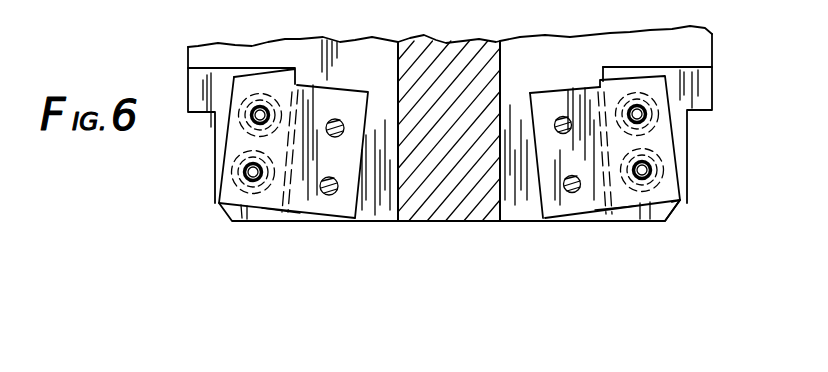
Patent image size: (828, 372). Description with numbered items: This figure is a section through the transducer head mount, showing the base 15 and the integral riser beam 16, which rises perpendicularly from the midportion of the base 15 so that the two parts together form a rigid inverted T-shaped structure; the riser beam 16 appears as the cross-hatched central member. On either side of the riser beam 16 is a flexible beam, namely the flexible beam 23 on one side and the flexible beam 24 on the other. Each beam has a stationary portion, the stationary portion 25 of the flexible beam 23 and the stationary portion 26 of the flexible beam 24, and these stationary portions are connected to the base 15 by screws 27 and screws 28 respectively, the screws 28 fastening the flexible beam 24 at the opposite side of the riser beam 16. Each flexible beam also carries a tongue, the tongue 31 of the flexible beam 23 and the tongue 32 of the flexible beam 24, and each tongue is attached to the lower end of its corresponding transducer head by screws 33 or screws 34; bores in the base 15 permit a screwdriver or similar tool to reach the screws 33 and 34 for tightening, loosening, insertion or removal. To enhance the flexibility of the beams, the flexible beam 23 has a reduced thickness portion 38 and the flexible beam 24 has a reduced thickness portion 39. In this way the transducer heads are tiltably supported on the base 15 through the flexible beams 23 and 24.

The base 15 is at (706, 43).
The riser beam 16 is at (443, 52).
The flexible beam 23 is at (212, 156).
The flexible beam 24 is at (696, 153).
The stationary portion 25 is at (248, 80).
The stationary portion 26 is at (648, 208).
The screws 27 is at (245, 177).
The screws 28 is at (646, 116).
The tongue 31 is at (351, 97).
The tongue 32 is at (562, 88).
The screws 33 is at (331, 195).
The screws 34 is at (558, 118).
The reduced thickness portion 38 is at (284, 204).
The reduced thickness portion 39 is at (618, 212).